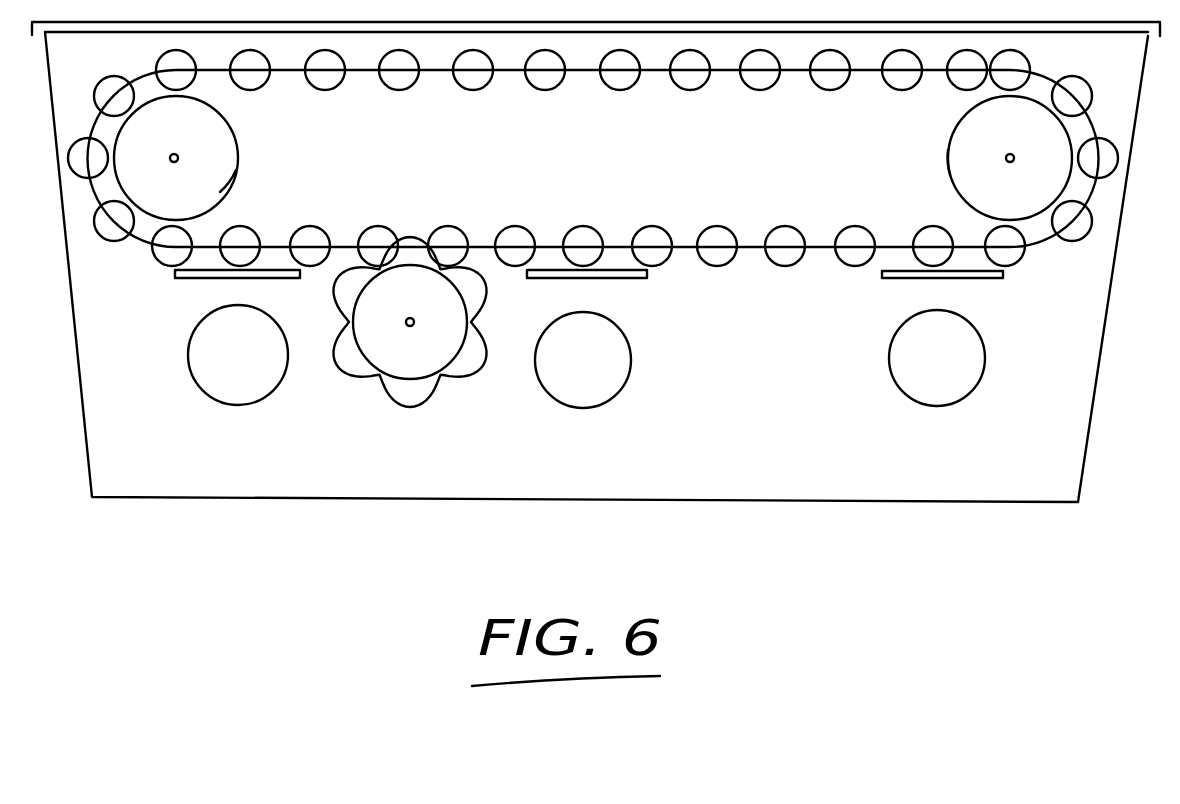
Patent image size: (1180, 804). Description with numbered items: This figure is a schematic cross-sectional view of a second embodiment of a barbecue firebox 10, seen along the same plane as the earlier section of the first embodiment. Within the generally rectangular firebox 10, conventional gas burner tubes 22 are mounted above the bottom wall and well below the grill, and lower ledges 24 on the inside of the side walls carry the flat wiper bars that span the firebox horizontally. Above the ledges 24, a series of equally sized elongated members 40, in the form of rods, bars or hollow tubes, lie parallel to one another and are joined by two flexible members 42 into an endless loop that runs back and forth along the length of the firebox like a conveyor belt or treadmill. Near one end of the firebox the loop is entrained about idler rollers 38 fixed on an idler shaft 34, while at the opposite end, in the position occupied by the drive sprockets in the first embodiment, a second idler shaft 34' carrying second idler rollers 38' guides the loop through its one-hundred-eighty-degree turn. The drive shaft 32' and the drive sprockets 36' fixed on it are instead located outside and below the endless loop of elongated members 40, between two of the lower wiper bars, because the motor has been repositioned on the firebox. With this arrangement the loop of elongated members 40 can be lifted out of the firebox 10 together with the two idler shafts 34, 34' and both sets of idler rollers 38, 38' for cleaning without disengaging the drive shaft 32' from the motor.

The firebox 10 is at (186, 512).
The gas burner tubes 22 is at (257, 388).
The lower ledges 24 is at (204, 275).
The drive shaft 32' is at (429, 346).
The idler shaft 34 is at (981, 158).
The second idler shaft 34' is at (218, 158).
The drive sprockets 36' is at (410, 344).
The idler rollers 38 is at (915, 170).
The second idler rollers 38' is at (281, 184).
The elongated members 40 is at (770, 230).
The flexible members 42 is at (590, 73).